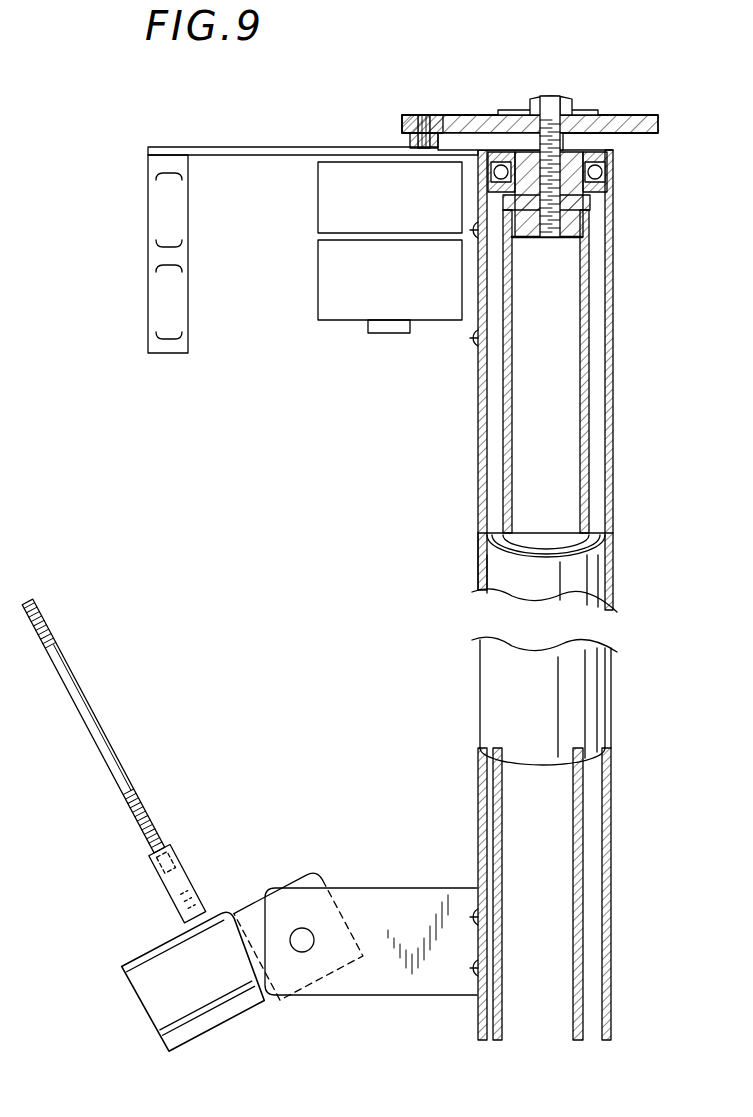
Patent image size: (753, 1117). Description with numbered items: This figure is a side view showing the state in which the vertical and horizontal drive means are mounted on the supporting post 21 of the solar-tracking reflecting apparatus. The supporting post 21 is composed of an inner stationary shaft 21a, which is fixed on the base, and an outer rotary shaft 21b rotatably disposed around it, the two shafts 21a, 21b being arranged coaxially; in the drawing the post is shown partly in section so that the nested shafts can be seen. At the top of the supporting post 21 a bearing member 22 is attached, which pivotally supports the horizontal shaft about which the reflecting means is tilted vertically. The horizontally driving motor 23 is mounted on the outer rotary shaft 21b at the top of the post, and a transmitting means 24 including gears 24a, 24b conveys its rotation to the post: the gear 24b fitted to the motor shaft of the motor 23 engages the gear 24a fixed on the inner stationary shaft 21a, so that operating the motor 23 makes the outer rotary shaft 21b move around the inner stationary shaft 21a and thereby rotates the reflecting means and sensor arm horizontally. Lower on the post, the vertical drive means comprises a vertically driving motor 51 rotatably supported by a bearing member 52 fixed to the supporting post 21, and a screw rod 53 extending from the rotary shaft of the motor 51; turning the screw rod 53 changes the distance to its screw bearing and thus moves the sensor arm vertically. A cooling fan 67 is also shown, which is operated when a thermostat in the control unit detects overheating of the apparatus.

The supporting post 21 is at (531, 595).
The inner stationary shaft 21a is at (507, 436).
The outer rotary shaft 21b is at (487, 403).
The bearing member 22 is at (605, 86).
The horizontally driving motor 23 is at (317, 273).
The transmitting means 24 is at (528, 87).
The gear 24a is at (476, 125).
The gear 24b is at (423, 102).
The vertically driving motor 51 is at (145, 992).
The bearing member 52 is at (394, 904).
The screw rod 53 is at (91, 711).
The cooling fan 67 is at (161, 260).